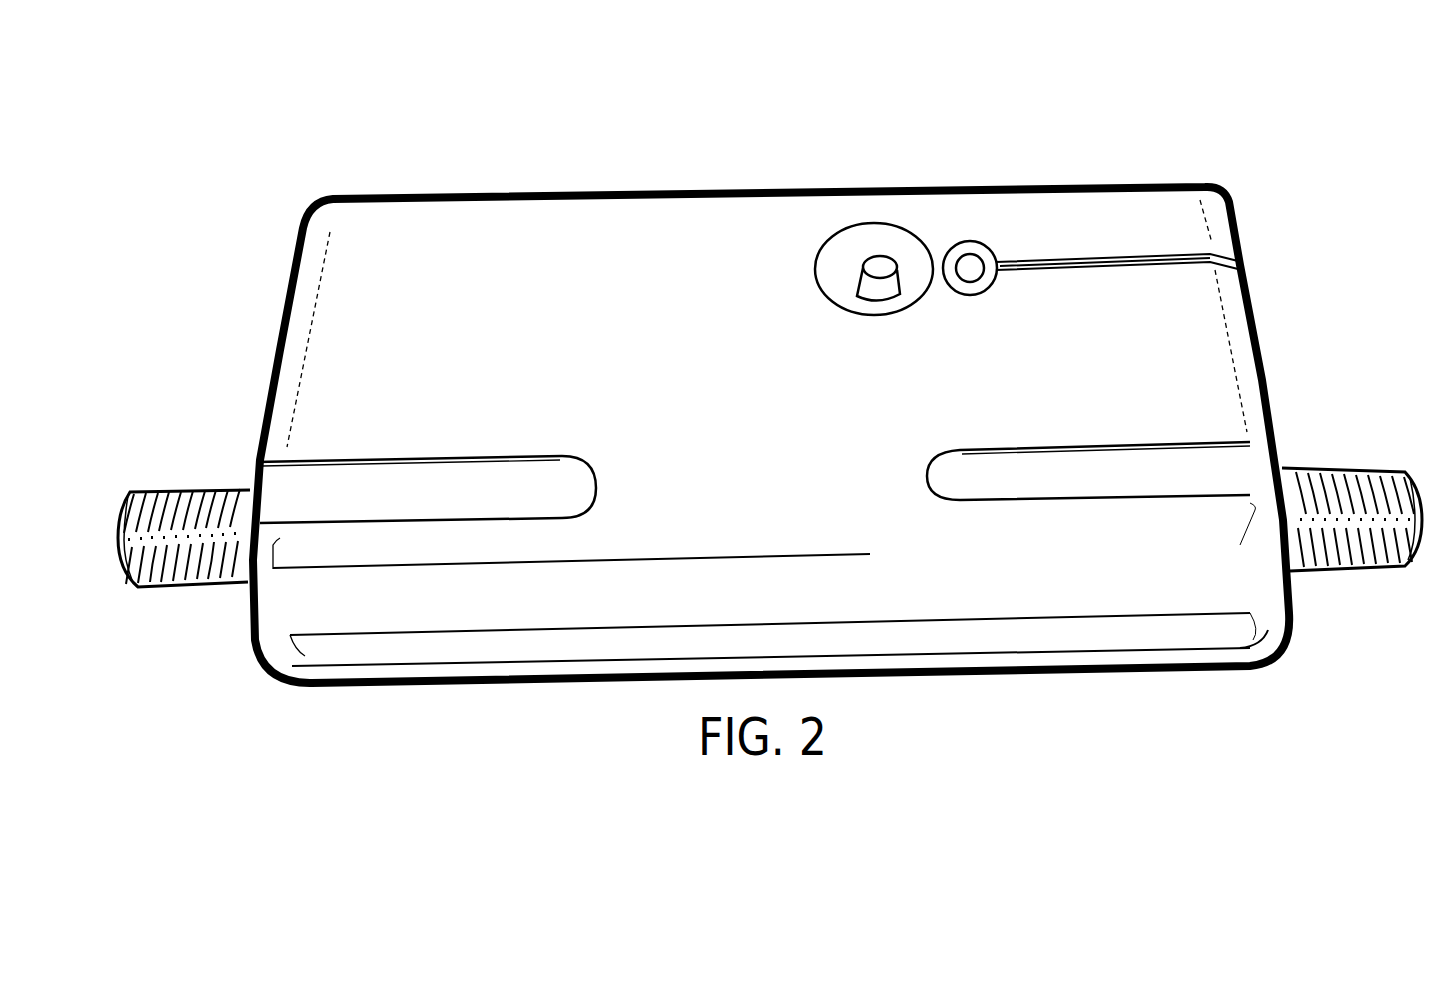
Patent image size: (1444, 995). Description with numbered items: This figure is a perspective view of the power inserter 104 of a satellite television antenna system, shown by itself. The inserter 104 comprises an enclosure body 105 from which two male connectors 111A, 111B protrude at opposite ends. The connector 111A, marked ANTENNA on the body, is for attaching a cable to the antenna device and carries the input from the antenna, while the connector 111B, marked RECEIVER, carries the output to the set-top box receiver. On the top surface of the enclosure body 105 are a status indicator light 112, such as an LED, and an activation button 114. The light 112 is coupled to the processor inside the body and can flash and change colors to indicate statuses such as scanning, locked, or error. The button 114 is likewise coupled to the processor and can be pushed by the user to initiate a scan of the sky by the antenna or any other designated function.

The power inserter 104 is at (608, 190).
The enclosure body 105 is at (427, 238).
The activation button 114 is at (878, 266).
The status indicator light 112 is at (970, 268).
The male connector (antenna) 111A is at (172, 572).
The male connector (receiver) 111B is at (1332, 572).